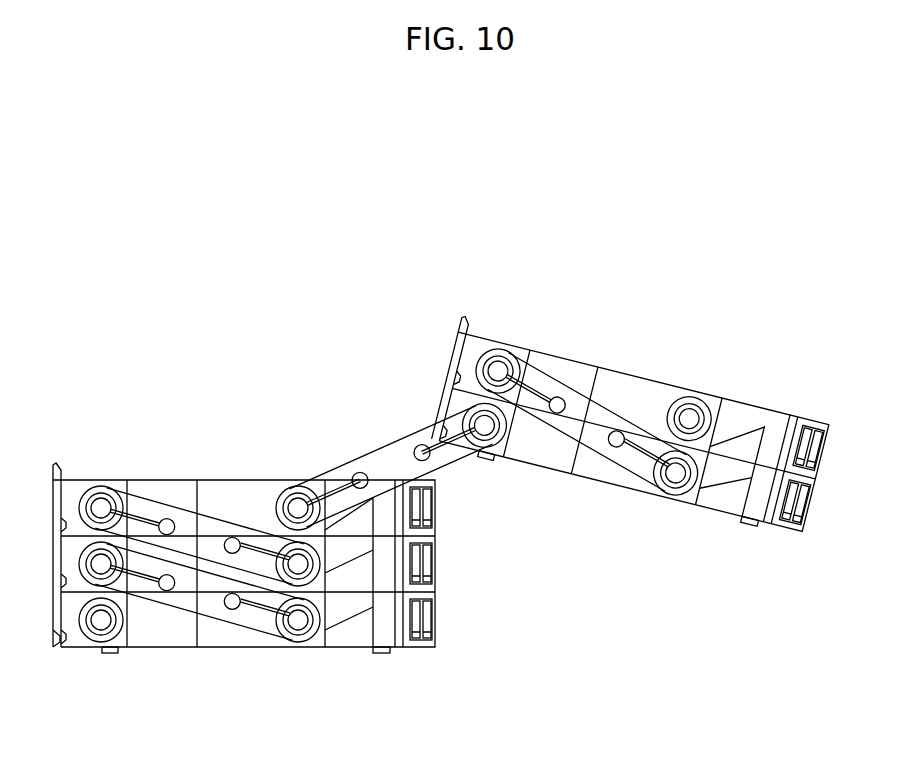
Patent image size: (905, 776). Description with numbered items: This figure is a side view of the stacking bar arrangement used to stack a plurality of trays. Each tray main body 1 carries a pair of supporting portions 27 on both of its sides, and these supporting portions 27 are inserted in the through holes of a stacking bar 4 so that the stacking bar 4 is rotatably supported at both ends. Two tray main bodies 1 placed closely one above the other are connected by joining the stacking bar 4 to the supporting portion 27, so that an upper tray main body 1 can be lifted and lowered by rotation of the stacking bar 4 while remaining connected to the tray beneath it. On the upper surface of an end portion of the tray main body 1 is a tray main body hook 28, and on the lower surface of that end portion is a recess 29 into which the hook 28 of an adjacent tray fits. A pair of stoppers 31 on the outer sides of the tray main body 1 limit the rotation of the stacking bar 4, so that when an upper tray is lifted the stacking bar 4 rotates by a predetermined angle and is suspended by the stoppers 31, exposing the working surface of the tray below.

The tray main body 1 is at (225, 630).
The stacking bar 4 is at (387, 463).
The supporting portion 27 is at (297, 505).
The tray main body hook 28 is at (62, 478).
The recess 29 is at (53, 645).
The stopper 31 is at (343, 635).